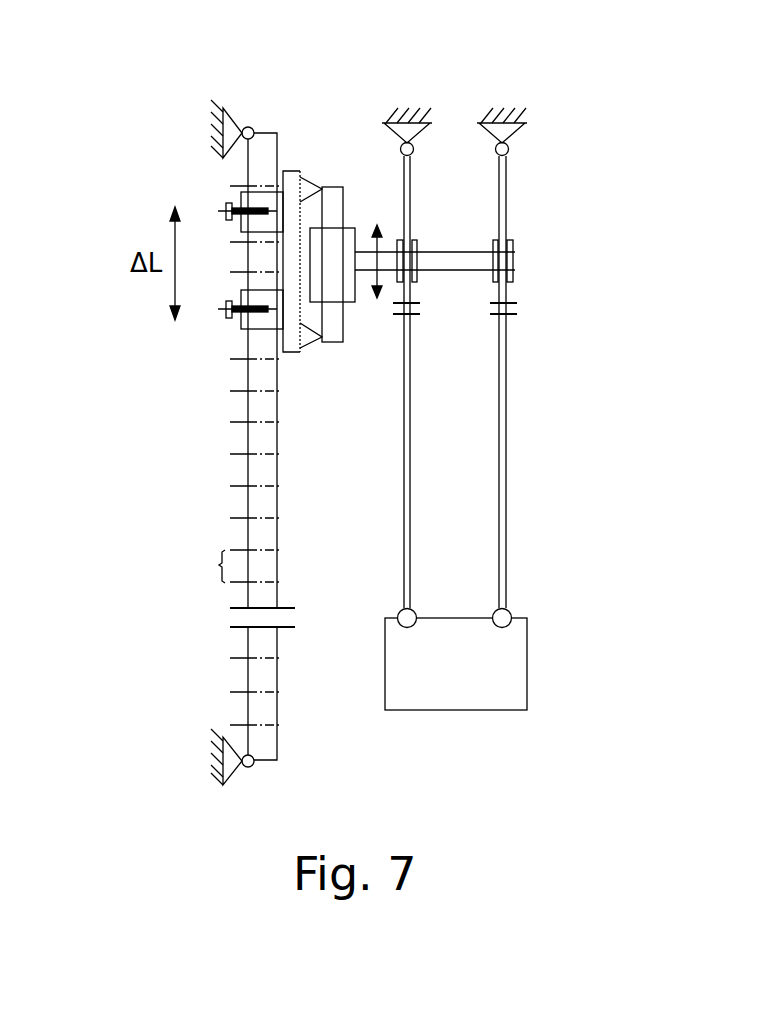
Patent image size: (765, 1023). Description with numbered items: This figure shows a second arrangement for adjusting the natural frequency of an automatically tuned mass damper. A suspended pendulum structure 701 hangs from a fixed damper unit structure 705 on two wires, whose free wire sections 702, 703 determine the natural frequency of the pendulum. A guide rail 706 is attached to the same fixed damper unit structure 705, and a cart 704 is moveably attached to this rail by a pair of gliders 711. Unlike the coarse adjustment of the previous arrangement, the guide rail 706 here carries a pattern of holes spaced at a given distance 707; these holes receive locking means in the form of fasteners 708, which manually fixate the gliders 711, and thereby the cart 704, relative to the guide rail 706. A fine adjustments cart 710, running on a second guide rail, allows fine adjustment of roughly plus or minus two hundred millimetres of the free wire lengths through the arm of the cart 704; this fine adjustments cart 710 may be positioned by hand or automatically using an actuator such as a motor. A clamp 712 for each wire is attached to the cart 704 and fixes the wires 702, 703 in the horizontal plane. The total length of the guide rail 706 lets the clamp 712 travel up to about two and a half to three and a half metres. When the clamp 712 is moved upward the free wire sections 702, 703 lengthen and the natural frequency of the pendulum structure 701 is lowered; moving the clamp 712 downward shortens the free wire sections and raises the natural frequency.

The suspended pendulum structure 701 is at (517, 662).
The free wire section 702 is at (506, 452).
The free wire section 703 is at (404, 465).
The cart 704 is at (291, 190).
The fixed damper unit structure 705 is at (416, 105).
The guide rail 706 is at (258, 637).
The given distance 707 is at (220, 565).
The fasteners 708 is at (227, 203).
The fine adjustments cart 710 is at (238, 200).
The gliders 711 is at (240, 327).
The clamp 712 is at (418, 285).